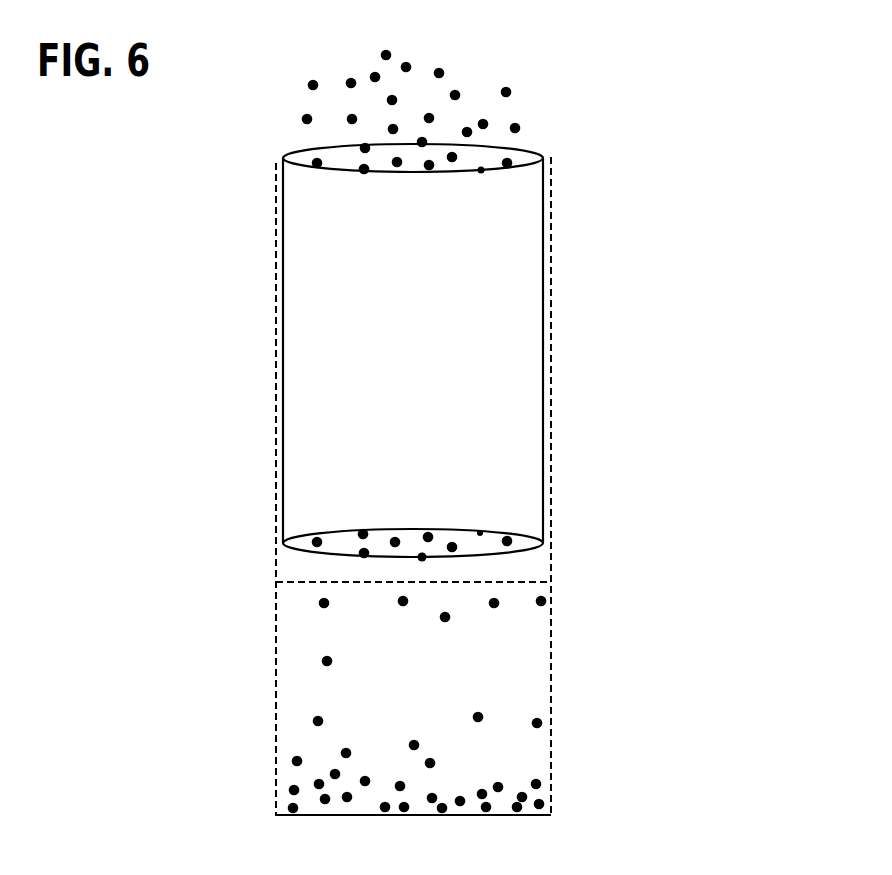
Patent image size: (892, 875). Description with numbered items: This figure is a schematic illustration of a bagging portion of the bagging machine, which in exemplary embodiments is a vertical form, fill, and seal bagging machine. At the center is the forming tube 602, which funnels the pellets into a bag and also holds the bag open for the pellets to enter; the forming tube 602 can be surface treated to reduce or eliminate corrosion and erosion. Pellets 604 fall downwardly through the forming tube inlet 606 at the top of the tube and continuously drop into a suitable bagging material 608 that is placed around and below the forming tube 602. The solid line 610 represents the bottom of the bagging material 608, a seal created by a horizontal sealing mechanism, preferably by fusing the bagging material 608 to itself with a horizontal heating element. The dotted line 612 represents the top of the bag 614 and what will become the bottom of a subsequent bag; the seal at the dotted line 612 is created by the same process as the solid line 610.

The forming tube 602 is at (310, 447).
The pellets 604 is at (520, 127).
The forming tube inlet 606 is at (285, 165).
The bagging material 608 is at (550, 398).
The solid line (bottom seal of bagging material) 610 is at (275, 815).
The dotted line (top seal of bag) 612 is at (532, 582).
The bag 614 is at (533, 665).